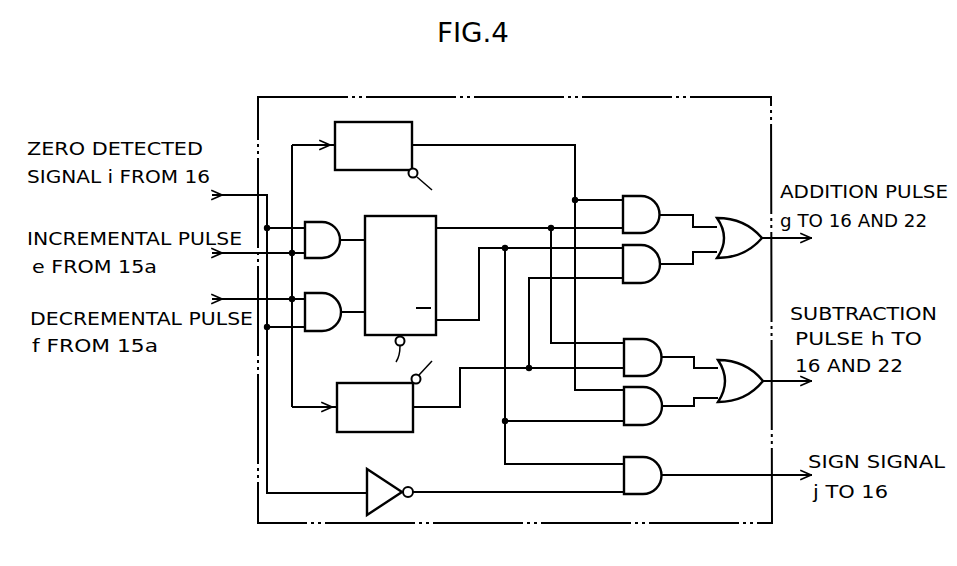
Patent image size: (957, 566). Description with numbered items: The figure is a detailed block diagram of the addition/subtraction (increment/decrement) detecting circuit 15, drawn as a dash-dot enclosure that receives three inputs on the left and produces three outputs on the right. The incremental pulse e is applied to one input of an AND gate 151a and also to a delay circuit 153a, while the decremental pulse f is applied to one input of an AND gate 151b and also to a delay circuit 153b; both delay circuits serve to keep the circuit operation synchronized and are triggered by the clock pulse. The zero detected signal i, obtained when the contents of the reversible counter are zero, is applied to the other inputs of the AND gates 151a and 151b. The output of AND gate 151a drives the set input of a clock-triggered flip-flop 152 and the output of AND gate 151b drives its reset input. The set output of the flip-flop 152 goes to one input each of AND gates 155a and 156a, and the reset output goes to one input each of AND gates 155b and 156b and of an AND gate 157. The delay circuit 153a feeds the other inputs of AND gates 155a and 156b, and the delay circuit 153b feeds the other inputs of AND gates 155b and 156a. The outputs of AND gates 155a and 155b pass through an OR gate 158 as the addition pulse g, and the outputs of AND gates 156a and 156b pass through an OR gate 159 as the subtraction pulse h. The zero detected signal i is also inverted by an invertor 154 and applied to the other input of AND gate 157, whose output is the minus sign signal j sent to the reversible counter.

The addition/subtraction detecting circuit 15 is at (309, 512).
The AND gate 151a is at (320, 222).
The AND gate 151b is at (326, 300).
The flip-flop 152 is at (444, 258).
The delay circuit 153a is at (336, 124).
The delay circuit 153b is at (337, 421).
The invertor 154 is at (383, 487).
The AND gate 155a is at (632, 204).
The AND gate 155b is at (639, 266).
The AND gate 156a is at (634, 345).
The AND gate 156b is at (648, 410).
The AND gate 157 is at (650, 480).
The OR gate 158 is at (736, 228).
The OR gate 159 is at (737, 370).